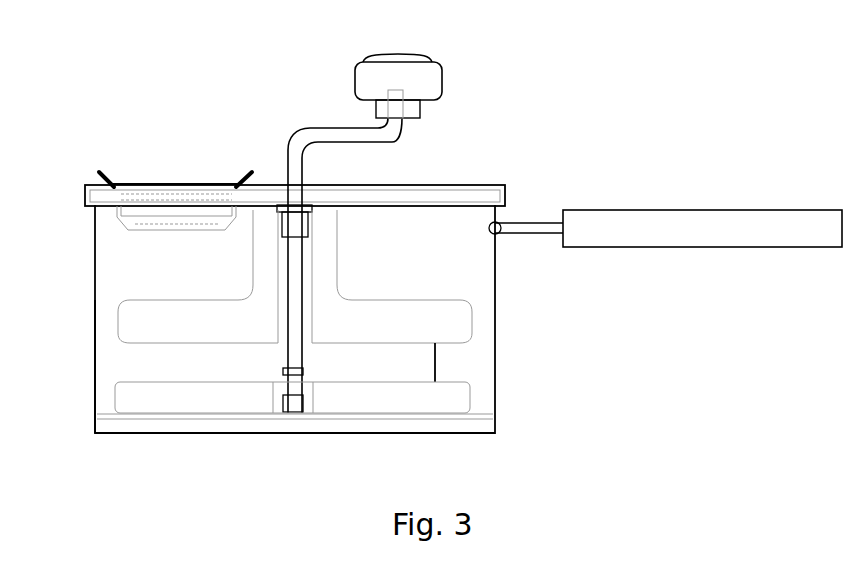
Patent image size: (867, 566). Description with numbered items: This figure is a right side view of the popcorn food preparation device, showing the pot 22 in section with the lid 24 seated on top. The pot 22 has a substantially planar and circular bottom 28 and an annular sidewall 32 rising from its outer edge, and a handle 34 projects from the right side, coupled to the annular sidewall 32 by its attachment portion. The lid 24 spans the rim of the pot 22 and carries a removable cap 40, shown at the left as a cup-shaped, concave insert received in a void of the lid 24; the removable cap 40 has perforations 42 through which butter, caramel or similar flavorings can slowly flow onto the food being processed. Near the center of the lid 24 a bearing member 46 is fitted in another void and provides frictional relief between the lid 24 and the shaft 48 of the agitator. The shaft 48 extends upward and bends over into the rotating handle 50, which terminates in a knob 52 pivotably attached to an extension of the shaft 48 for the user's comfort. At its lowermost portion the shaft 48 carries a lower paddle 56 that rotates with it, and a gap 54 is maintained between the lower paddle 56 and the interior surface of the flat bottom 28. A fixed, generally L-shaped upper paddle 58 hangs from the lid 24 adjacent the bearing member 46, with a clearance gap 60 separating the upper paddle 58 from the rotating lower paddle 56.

The pot 22 is at (95, 307).
The lid 24 is at (507, 192).
The bottom 28 is at (420, 420).
The annular sidewall 32 is at (95, 366).
The handle 34 is at (710, 210).
The removable cap 40 is at (112, 177).
The perforations 42 is at (160, 229).
The bearing member 46 is at (303, 185).
The shaft 48 is at (288, 153).
The rotating handle 50 is at (393, 139).
The knob 52 is at (435, 62).
The gap 54 is at (463, 421).
The lower paddle 56 is at (478, 392).
The upper paddle 58 is at (480, 318).
The clearance gap 60 is at (437, 362).